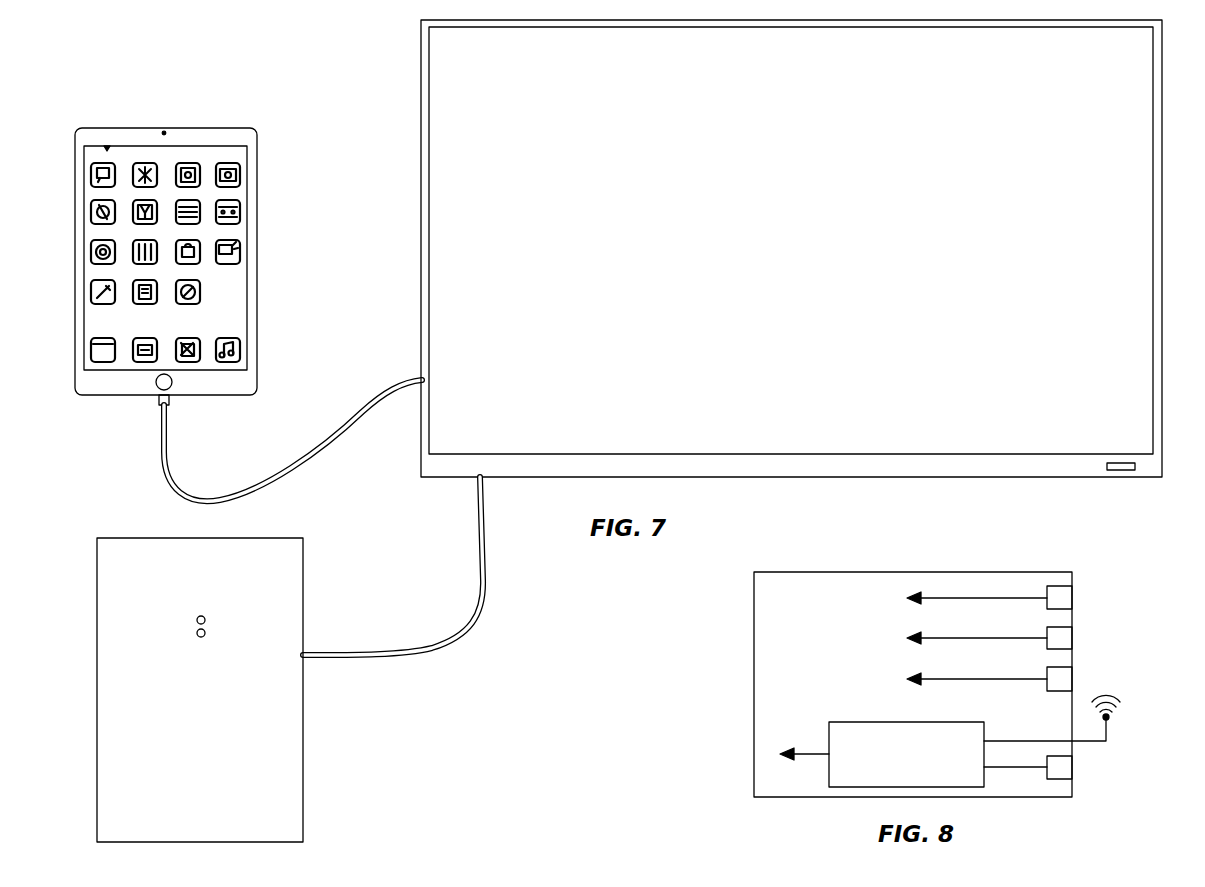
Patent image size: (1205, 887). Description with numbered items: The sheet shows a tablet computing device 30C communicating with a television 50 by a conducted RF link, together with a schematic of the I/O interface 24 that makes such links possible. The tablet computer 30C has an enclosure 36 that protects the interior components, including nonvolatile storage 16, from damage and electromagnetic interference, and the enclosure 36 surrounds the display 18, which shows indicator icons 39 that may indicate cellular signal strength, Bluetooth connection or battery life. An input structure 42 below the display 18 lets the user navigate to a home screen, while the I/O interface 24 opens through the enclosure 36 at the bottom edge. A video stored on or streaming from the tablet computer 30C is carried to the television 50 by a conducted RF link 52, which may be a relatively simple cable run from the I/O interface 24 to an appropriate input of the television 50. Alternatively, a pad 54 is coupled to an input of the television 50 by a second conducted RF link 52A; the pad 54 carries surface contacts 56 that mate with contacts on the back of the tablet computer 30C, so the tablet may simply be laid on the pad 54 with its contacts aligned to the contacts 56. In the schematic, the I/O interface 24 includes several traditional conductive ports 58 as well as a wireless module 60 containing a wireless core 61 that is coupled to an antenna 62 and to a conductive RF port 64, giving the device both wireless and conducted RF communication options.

In FIG. 7, the tablet computing device 30C is at (63, 126).
In FIG. 7, the nonvolatile storage 16 is at (99, 128).
In FIG. 7, the enclosure 36 is at (234, 128).
In FIG. 7, the indicator icons 39 is at (165, 163).
In FIG. 7, the display 18 is at (276, 281).
In FIG. 7, the input structures 42 is at (174, 381).
In FIG. 7, the I/O interface 24 is at (159, 401).
In FIG. 8, the I/O interface 24 is at (905, 572).
In FIG. 7, the television 50 is at (421, 246).
In FIG. 7, the conducted RF link 52 is at (275, 484).
In FIG. 7, the conducted RF link 52A is at (413, 648).
In FIG. 7, the pad 54 is at (203, 538).
In FIG. 7, the surface contacts 56 is at (190, 630).
In FIG. 8, the conductive ports 58 is at (1074, 598).
In FIG. 8, the wireless module 60 is at (882, 721).
In FIG. 8, the wireless core 61 is at (905, 722).
In FIG. 8, the antenna 62 is at (1106, 723).
In FIG. 8, the conductive RF port 64 is at (1074, 768).